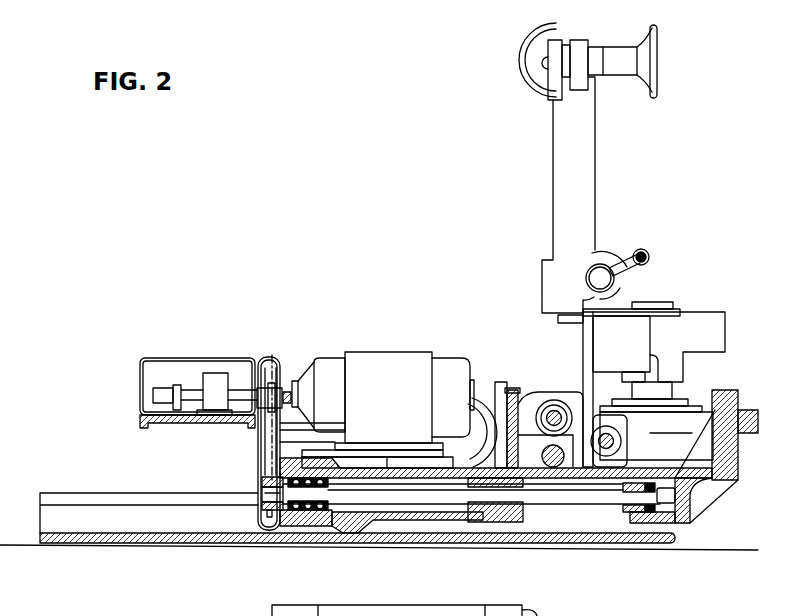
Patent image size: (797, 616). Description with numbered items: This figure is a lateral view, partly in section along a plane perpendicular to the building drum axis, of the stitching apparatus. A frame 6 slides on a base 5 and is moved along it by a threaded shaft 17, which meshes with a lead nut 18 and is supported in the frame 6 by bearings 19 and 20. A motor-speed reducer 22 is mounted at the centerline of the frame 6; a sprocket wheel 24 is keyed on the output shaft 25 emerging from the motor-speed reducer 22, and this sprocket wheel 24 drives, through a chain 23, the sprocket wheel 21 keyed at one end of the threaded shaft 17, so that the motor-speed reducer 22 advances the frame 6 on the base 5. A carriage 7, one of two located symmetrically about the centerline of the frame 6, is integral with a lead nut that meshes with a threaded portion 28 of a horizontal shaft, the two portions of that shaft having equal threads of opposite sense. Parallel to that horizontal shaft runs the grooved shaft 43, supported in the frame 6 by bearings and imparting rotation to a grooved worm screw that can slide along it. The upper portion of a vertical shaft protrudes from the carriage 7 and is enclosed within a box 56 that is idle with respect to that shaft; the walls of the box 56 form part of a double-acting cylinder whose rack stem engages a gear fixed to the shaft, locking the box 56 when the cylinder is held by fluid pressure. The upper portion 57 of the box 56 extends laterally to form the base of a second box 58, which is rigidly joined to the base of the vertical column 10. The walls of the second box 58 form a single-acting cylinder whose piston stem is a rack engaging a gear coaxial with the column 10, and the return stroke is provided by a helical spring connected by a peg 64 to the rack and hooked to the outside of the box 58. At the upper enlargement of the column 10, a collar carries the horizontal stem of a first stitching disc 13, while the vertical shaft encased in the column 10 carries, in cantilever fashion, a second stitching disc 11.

The base 5 is at (112, 538).
The frame 6 is at (476, 463).
The carriage 7 is at (683, 423).
The vertical column 10 is at (582, 167).
The second stitching disc 11 is at (655, 27).
The first stitching disc 13 is at (523, 82).
The threaded shaft 17 is at (575, 498).
The lead nut 18 is at (492, 523).
The bearing 19 is at (318, 527).
The bearing 20 is at (682, 505).
The sprocket wheel 21 is at (265, 473).
The motor-speed reducer 22 is at (403, 363).
The chain 23 is at (267, 443).
The sprocket wheel 24 is at (275, 356).
The output shaft 25 is at (287, 388).
The threaded portion of horizontal shaft 28 is at (553, 416).
The grooved shaft 43 is at (611, 447).
The box 56 is at (708, 343).
The upper portion of box 57 is at (625, 312).
The second box 58 is at (615, 255).
The peg 64 is at (638, 263).